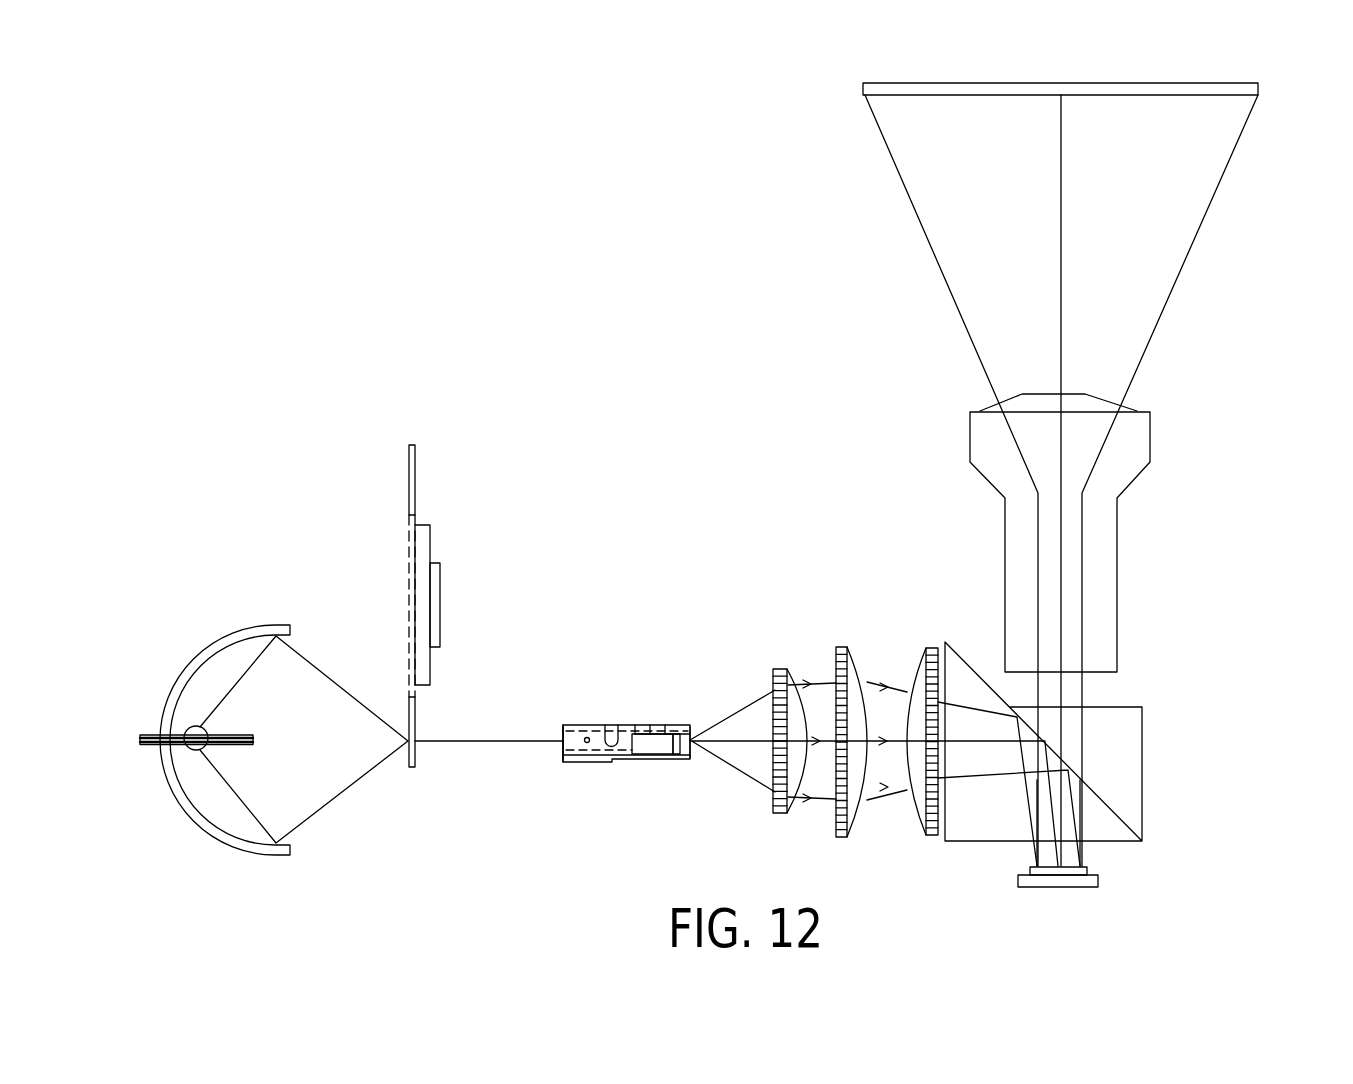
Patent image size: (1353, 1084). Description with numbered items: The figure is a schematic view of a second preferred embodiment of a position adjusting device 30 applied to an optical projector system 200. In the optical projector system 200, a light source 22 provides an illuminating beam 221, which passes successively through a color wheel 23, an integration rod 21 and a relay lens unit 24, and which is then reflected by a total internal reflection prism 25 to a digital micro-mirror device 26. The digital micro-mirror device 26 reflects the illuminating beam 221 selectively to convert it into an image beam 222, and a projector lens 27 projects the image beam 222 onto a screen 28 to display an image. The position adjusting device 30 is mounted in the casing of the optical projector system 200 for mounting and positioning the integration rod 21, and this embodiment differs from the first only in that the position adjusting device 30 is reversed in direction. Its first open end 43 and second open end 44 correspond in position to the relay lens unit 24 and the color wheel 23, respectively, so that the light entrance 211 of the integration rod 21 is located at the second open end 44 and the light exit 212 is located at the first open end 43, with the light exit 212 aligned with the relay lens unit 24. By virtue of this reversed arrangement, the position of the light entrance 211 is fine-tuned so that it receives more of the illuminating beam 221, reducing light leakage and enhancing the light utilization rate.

The optical projector system 200 is at (722, 507).
The light source 22 is at (190, 727).
The color wheel 23 is at (409, 487).
The illuminating beam 221 is at (478, 743).
The position adjusting device 30 is at (578, 708).
The integration rod 21 is at (672, 724).
The first open end 43 is at (692, 727).
The second open end 44 is at (563, 736).
The light entrance 211 is at (556, 750).
The light exit 212 is at (695, 752).
The relay lens unit 24 is at (935, 840).
The total internal reflection prism 25 is at (1128, 773).
The image beam 222 is at (1082, 820).
The digital micro-mirror device 26 is at (1080, 868).
The projector lens 27 is at (1103, 585).
The screen 28 is at (1245, 92).